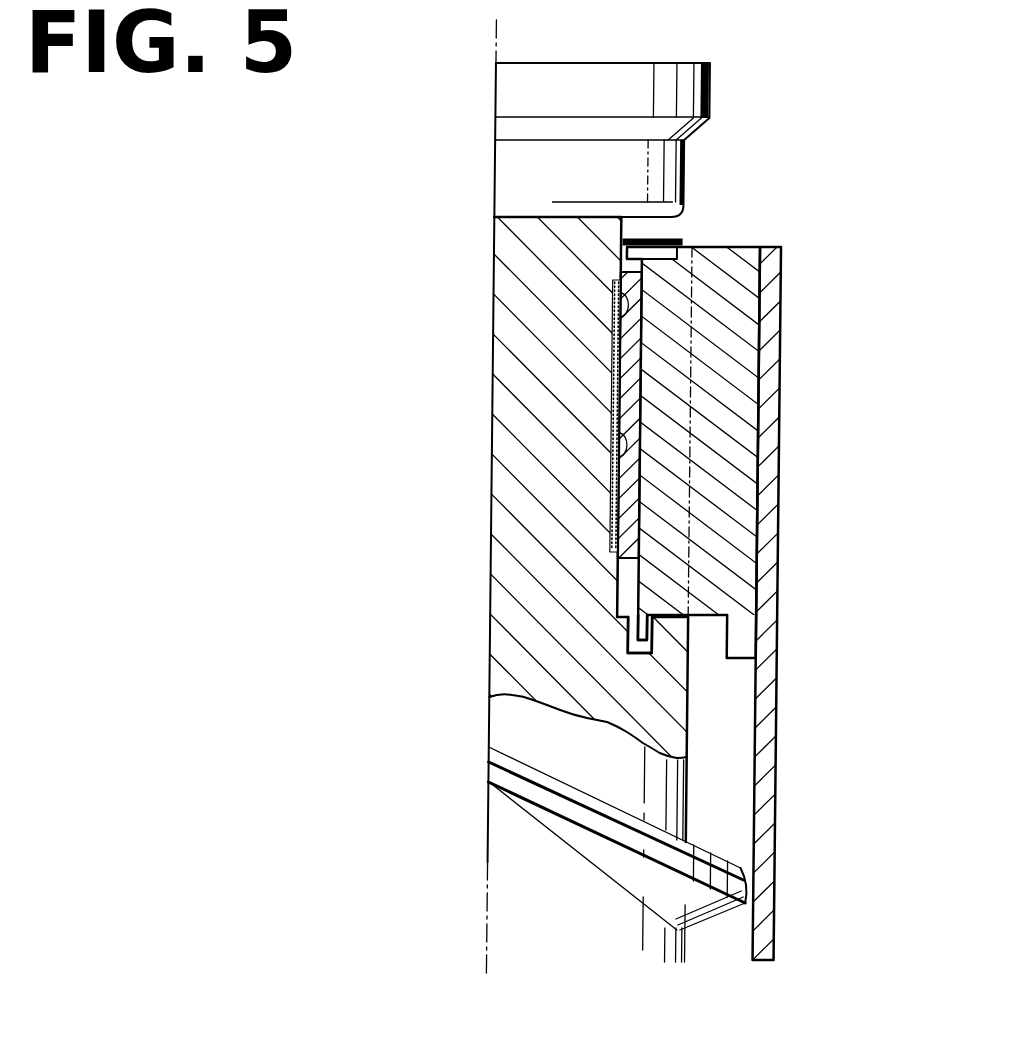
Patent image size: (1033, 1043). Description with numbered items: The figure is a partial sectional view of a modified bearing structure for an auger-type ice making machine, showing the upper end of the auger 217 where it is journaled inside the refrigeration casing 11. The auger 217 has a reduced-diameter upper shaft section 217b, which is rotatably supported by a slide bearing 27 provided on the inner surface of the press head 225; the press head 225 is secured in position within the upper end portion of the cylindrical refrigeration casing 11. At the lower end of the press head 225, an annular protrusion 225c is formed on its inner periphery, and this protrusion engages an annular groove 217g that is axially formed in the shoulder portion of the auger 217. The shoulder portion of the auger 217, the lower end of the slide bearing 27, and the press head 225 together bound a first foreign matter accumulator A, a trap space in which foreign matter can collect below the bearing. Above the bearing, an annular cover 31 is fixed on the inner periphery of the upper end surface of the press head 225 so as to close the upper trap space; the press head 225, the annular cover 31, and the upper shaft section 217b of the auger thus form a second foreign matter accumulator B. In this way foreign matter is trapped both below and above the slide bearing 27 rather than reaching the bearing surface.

The auger 217 is at (538, 725).
The upper shaft section of the auger 217b is at (527, 303).
The annular groove 217g is at (631, 643).
The slide bearing 27 is at (628, 393).
The annular cover 31 is at (638, 238).
The press head 225 is at (719, 397).
The annular protrusion 225c is at (652, 633).
The refrigeration casing 11 is at (772, 318).
The first foreign matter accumulator A is at (631, 580).
The second foreign matter accumulator B is at (662, 255).